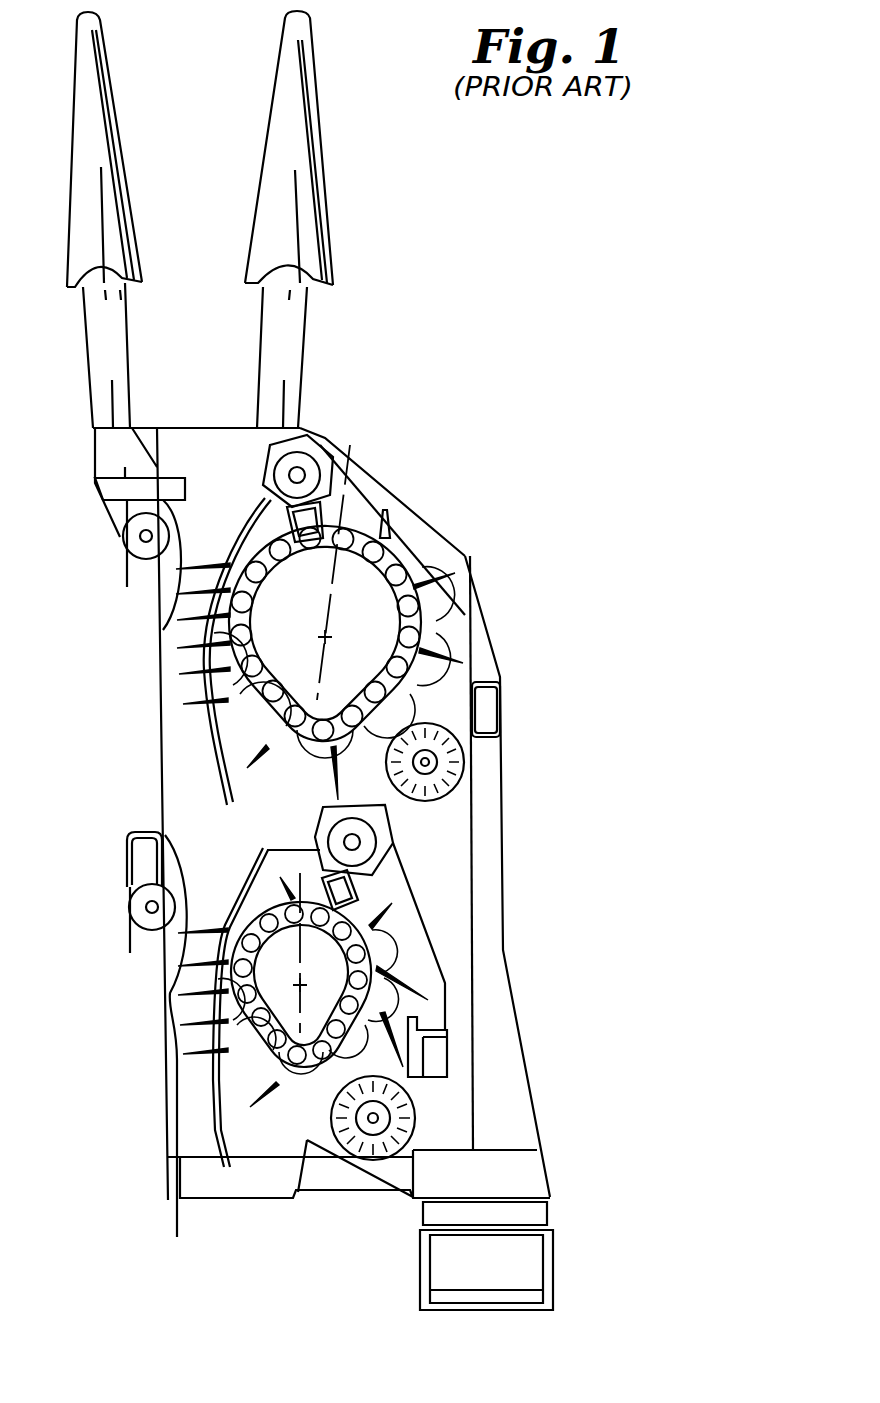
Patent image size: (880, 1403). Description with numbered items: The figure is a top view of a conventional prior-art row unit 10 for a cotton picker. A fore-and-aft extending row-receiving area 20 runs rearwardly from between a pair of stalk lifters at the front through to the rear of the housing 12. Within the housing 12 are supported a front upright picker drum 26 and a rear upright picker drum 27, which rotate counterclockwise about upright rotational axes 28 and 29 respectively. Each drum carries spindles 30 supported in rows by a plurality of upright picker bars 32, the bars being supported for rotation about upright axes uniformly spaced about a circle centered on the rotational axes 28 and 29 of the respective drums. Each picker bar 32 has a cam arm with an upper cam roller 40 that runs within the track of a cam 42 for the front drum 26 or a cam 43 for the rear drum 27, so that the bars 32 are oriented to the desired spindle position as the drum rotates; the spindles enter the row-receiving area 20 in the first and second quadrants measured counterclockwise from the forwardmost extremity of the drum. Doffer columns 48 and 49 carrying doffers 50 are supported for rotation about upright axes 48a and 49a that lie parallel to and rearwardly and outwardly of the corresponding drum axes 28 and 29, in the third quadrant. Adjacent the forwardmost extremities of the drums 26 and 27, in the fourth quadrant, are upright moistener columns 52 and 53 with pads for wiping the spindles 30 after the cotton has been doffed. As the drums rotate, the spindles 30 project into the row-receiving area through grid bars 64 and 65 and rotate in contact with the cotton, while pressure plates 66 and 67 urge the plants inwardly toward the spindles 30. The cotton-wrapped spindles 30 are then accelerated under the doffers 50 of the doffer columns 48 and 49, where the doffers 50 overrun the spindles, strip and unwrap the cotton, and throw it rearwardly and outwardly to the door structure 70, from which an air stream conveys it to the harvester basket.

The row unit 10 is at (475, 395).
The housing 12 is at (370, 474).
The row-receiving area 20 is at (192, 262).
The front upright picker drum 26 is at (374, 618).
The rear upright picker drum 27 is at (390, 945).
The rotational axis of front drum 28 is at (318, 632).
The rotational axis of rear drum 29 is at (315, 953).
The spindles 30 is at (334, 778).
The upright picker bars 32 is at (420, 650).
The upper cam roller 40 is at (412, 634).
The cam 42 is at (405, 630).
The cam 43 is at (242, 890).
The doffer column 48 is at (451, 941).
The upright axis of doffer column 48a is at (429, 761).
The doffer column 49 is at (390, 1118).
The upright axis of doffer column 49a is at (355, 1118).
The doffers 50 is at (443, 803).
The upright moistener column 52 is at (322, 440).
The upright moistener column 53 is at (383, 862).
The grid bars 64 is at (243, 553).
The grid bars 65 is at (247, 870).
The pressure plate 66 is at (183, 592).
The pressure plate 67 is at (167, 953).
The door structure 70 is at (508, 873).